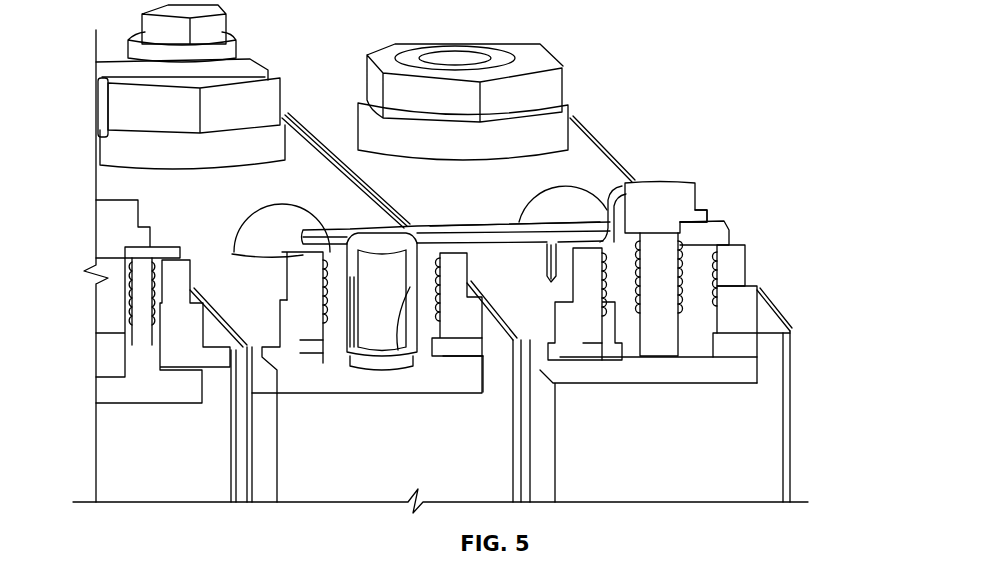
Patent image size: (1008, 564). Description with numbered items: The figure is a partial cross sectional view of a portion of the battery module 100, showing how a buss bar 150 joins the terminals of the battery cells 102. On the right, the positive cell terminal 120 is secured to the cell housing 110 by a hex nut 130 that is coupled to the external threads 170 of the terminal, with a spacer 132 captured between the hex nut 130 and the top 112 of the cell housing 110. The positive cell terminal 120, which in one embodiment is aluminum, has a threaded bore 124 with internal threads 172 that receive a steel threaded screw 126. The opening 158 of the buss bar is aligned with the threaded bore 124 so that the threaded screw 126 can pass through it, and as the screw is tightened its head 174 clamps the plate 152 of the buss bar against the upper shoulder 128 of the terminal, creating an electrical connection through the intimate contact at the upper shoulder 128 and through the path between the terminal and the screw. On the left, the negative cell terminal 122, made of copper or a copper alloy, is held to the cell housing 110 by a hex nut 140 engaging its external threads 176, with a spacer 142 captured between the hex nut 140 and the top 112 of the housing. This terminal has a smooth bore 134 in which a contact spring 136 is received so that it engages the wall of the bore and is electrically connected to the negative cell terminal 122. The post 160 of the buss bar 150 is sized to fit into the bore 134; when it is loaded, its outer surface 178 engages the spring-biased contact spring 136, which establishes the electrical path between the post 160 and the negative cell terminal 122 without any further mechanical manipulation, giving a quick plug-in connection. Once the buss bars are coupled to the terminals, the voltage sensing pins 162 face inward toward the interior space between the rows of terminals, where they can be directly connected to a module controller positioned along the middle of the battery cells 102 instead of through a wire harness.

The battery module 100 is at (607, 36).
The battery cells 102 is at (578, 131).
The cell housing 110 is at (788, 430).
The top of the cell housing 112 is at (590, 168).
The positive cell terminal 120 is at (702, 318).
The negative cell terminal 122 is at (343, 354).
The threaded bore 124 is at (673, 326).
The threaded screw 126 is at (688, 196).
The upper shoulder 128 is at (738, 243).
The hex nut 130 is at (735, 263).
The spacer 132 is at (745, 315).
The smooth bore 134 is at (374, 372).
The contact spring 136 is at (350, 360).
The hex nut 140 is at (310, 288).
The spacer 142 is at (288, 322).
The buss bar 150 is at (489, 222).
The plate 152 is at (520, 235).
The opening 158 is at (694, 228).
The post 160 is at (407, 287).
The voltage sensing pins 162 is at (546, 258).
The external threads 170 is at (605, 307).
The internal threads 172 is at (647, 345).
The head 174 is at (596, 226).
The external threads 176 is at (438, 312).
The outer surface 178 is at (462, 345).